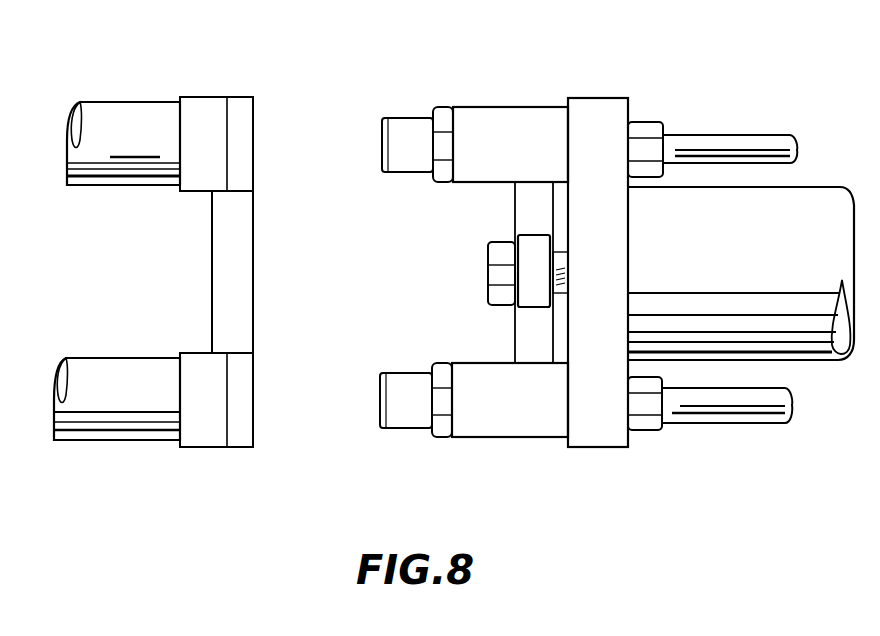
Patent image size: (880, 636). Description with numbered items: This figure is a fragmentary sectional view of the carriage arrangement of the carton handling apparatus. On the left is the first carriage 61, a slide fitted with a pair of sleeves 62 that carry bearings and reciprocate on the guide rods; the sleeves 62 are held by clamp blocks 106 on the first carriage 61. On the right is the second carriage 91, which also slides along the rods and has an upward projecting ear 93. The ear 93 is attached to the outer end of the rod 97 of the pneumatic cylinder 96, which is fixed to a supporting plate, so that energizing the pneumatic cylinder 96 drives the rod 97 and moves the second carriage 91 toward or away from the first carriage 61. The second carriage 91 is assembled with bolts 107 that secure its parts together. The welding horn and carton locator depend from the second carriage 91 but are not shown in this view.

The first carriage 61 is at (165, 85).
The sleeves 62 is at (120, 115).
The tube clamp blocks 106 is at (242, 117).
The second carriage 91 is at (680, 115).
The ear 93 is at (533, 245).
The pneumatic cylinder 96 is at (744, 262).
The rod 97 is at (548, 277).
The bolts 107 is at (406, 127).